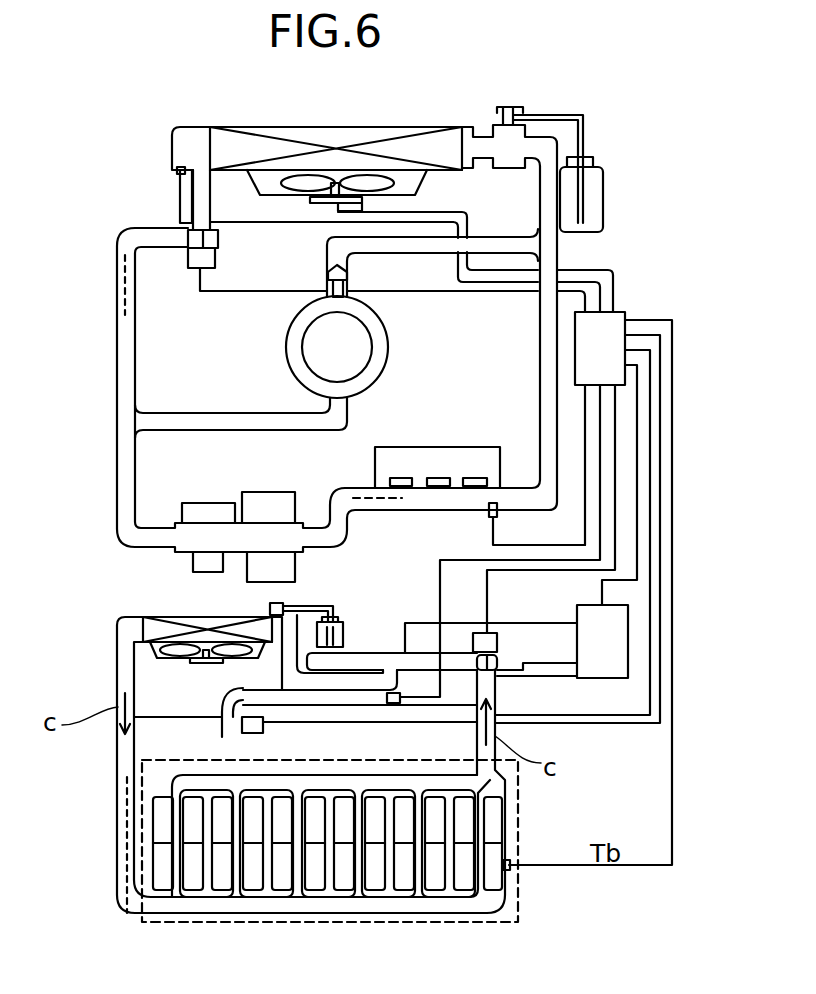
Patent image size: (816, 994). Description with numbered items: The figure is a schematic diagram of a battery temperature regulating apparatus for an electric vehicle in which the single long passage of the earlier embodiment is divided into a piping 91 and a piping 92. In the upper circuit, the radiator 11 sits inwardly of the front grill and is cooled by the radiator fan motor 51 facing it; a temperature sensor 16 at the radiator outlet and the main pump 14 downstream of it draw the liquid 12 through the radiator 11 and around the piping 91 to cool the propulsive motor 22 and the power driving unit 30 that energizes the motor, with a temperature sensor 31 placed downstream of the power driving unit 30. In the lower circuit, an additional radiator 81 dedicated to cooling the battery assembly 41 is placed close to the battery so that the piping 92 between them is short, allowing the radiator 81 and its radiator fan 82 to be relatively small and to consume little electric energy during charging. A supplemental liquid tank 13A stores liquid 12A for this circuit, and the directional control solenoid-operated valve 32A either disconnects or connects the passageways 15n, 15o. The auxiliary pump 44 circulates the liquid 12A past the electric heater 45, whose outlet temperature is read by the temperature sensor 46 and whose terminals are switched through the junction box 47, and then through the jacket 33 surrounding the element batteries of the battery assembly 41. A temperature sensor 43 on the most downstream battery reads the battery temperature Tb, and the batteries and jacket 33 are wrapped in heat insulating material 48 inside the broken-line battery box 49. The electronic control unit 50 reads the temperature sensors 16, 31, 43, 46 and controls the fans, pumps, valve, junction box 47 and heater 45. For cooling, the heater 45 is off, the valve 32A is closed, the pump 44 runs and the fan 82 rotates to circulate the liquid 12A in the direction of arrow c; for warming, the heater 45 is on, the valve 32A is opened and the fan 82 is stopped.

The radiator 11 is at (316, 126).
The temperature sensor 16 is at (180, 178).
The fan motor 51 is at (300, 212).
The main pump 14 is at (205, 259).
The piping 91 is at (117, 398).
The temperature regulating liquid 12 is at (117, 290).
The propulsive motor 22 is at (390, 347).
The power driving unit 30 is at (422, 447).
The temperature sensor 31 is at (488, 515).
The electronic control unit 50 is at (623, 310).
The radiator 81 is at (150, 617).
The radiator fan 82 is at (200, 665).
The piping 92 is at (117, 666).
The passageway 15n is at (177, 727).
The passageway 15o is at (232, 688).
The directional control solenoid-operated valve 32A is at (260, 734).
The liquid 12A is at (125, 813).
The supplemental liquid tank 13A is at (345, 646).
The electric heater 45 is at (405, 623).
The auxiliary pump 44 is at (497, 641).
The junction box 47 is at (600, 678).
The temperature sensor 46 is at (400, 704).
The battery assembly 41 is at (518, 815).
The jacket 33 is at (177, 873).
The temperature sensor 43 is at (511, 869).
The heat insulating material 48 is at (497, 907).
The battery box 49 is at (518, 900).